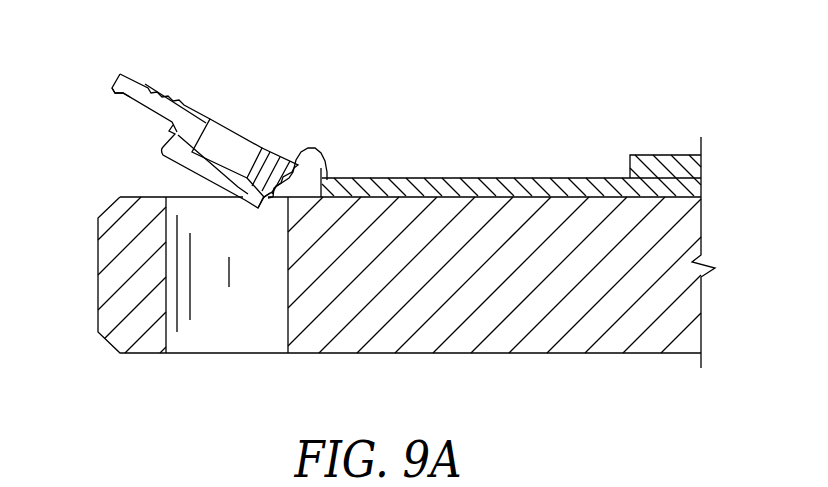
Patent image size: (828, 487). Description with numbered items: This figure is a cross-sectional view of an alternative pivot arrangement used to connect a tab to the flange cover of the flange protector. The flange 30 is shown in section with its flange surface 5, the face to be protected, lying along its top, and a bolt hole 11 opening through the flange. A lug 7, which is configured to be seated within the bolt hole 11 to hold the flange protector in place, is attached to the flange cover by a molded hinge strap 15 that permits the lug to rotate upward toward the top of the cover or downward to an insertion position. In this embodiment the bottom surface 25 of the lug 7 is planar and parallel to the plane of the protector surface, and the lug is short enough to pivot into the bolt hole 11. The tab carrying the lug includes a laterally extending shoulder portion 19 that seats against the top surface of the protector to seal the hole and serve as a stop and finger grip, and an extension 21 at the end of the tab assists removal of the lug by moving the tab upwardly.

The flange surface 5 is at (558, 197).
The lug 7 is at (173, 127).
The bolt hole 11 is at (202, 340).
The hinge strap 15 is at (312, 148).
The shoulder portion 19 is at (130, 97).
The extension 21 is at (150, 88).
The bottom surface 25 is at (183, 170).
The flange 30 is at (545, 335).